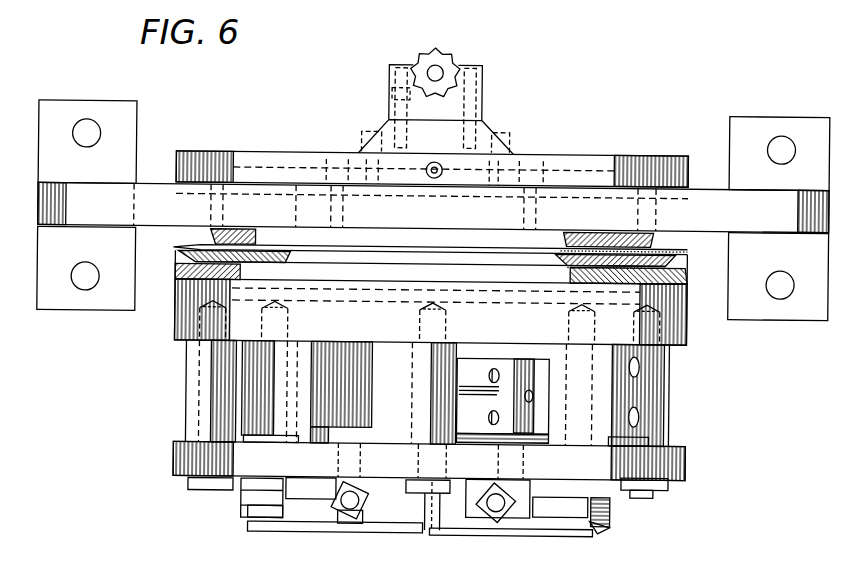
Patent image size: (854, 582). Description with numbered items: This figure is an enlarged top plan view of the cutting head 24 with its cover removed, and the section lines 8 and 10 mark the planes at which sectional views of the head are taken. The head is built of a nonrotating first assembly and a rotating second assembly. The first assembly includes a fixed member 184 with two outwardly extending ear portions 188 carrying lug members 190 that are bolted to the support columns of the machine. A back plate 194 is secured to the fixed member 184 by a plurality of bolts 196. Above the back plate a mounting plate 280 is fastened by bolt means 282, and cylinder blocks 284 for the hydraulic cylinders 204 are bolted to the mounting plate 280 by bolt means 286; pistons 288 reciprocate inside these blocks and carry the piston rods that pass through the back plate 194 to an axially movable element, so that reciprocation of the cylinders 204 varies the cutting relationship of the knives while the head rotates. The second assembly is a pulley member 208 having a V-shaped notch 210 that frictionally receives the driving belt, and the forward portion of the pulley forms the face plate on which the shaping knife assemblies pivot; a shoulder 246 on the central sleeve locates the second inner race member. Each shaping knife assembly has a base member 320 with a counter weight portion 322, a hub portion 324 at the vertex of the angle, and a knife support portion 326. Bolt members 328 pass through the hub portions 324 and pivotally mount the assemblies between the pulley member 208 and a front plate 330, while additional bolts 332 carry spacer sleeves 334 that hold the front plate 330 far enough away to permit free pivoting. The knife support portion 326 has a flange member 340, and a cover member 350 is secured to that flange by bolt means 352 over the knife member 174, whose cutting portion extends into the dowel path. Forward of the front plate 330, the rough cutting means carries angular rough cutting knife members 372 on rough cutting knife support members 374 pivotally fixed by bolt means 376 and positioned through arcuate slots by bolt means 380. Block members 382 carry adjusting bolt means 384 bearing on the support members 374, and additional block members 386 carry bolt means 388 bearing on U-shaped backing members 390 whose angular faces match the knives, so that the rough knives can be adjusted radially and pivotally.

The section line 8 is at (133, 443).
The section line 10 is at (135, 340).
The cutting head 24 is at (170, 377).
The knife member 174 is at (384, 436).
The fixed member 184 is at (660, 243).
The ear portions 188 is at (120, 187).
The lug members 190 is at (68, 103).
The back plate 194 is at (592, 155).
The bolts 196 is at (232, 168).
The hydraulic cylinders 204 is at (448, 96).
The pulley member 208 is at (682, 289).
The V-shaped notch 210 is at (662, 268).
The shoulder 246 is at (446, 56).
The mounting plate 280 is at (512, 151).
The bolt means 282 is at (372, 140).
The cylinder blocks 284 is at (482, 71).
The bolt means 286 is at (393, 90).
The pistons 288 is at (393, 103).
The base member 320 is at (651, 414).
The counter weight portion 322 is at (653, 432).
The hub portion 324 is at (582, 421).
The knife support portion 326 is at (327, 440).
The bolt members 328 is at (246, 488).
The front plate 330 is at (173, 476).
The additional bolts 332 is at (190, 494).
The spacer sleeves 334 is at (188, 404).
The flange member 340 is at (533, 392).
The cover member 350 is at (470, 361).
The bolt means 352 is at (490, 420).
The rough cutting knife member 372 is at (397, 533).
The rough cutting knife support members 374 is at (613, 518).
The bolt means 376 is at (258, 522).
The bolt means 380 is at (357, 526).
The block members 382 is at (336, 490).
The adjusting bolt means 384 is at (340, 515).
The additional block members 386 is at (470, 520).
The bolt means 388 is at (500, 522).
The U-shaped backing members 390 is at (537, 507).